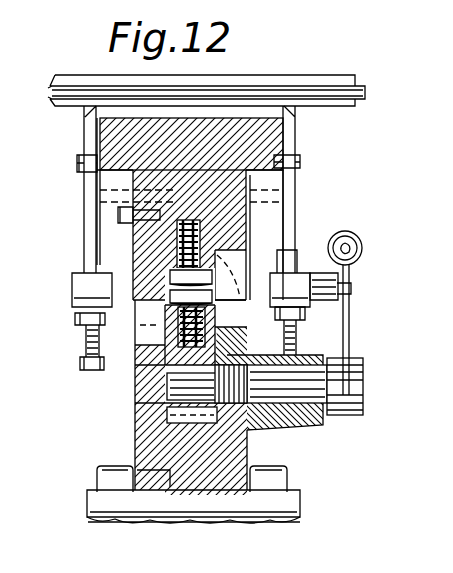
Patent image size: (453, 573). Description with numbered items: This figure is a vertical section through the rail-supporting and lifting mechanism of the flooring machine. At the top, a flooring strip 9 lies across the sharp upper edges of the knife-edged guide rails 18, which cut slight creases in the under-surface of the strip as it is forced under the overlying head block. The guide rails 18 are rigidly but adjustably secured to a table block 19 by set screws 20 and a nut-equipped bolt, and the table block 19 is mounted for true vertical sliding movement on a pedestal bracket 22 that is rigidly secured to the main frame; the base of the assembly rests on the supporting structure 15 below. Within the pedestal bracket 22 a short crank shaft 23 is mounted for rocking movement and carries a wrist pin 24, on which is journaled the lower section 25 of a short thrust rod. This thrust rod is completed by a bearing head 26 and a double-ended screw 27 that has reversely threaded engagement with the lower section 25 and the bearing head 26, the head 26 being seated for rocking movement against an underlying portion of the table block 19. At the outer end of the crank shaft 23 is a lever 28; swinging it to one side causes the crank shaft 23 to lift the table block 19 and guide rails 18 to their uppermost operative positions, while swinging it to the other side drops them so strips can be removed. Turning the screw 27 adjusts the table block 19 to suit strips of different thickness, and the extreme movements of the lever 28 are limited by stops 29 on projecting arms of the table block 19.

The top plate 9 is at (323, 84).
The base support 15 is at (250, 522).
The guide rails 18 is at (92, 150).
The table block 19 is at (133, 173).
The set screws 20 is at (86, 345).
The pedestal bracket 22 is at (280, 504).
The crank shaft 23 is at (308, 392).
The wrist pin 24 is at (160, 396).
The lower section of thrust rod 25 is at (165, 360).
The bearing head 26 is at (160, 256).
The double-ended screw 27 is at (175, 317).
The lever 28 is at (350, 335).
The stops 29 is at (352, 288).